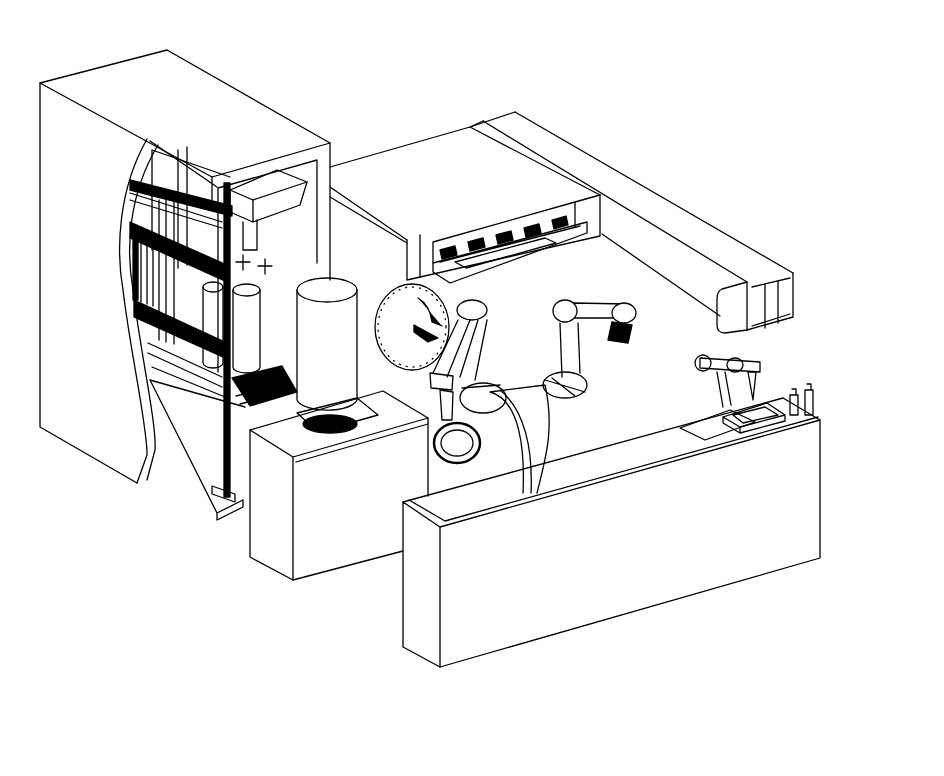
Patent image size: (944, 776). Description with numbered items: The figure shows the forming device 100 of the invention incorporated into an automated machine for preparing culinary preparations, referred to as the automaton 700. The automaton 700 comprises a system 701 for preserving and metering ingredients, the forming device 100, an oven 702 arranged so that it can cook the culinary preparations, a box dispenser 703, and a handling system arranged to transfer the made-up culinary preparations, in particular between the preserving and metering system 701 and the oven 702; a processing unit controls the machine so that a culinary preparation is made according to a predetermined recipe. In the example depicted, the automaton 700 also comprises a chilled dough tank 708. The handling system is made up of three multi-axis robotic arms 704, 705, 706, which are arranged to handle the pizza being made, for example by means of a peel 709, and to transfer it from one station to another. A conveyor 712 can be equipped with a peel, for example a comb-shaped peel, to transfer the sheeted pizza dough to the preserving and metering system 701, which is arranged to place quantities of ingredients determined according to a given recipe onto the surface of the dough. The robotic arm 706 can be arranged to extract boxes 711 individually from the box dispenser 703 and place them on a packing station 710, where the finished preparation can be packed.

The automaton 700 is at (678, 147).
The system for preserving and metering ingredients 701 is at (247, 95).
The oven 702 is at (424, 140).
The box dispenser 703 is at (693, 210).
The robotic arm 704 is at (592, 303).
The robotic arm 705 is at (480, 367).
The robotic arm 706 is at (760, 373).
The chilled dough tank 708 is at (348, 278).
The peel 709 is at (447, 463).
The packing station 710 is at (655, 448).
The boxes 711 is at (727, 430).
The conveyor 712 is at (217, 413).
The forming device 100 is at (307, 388).